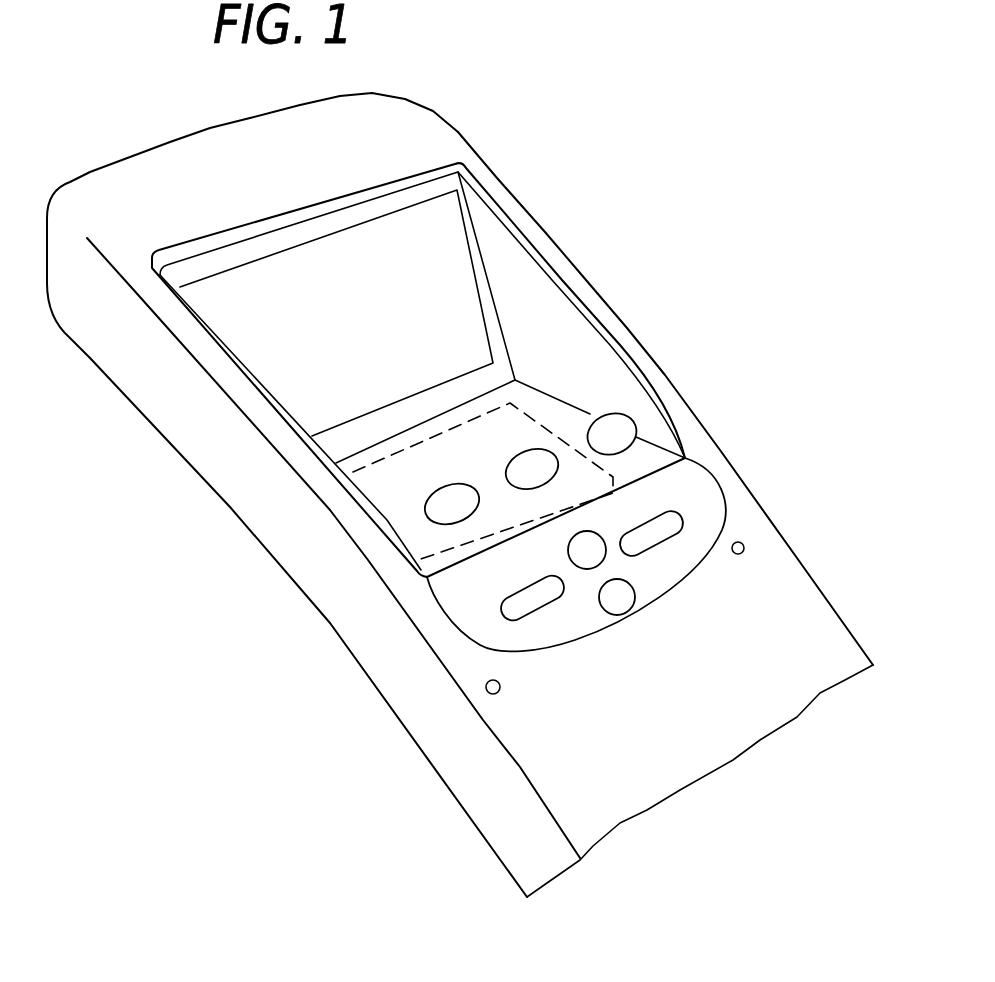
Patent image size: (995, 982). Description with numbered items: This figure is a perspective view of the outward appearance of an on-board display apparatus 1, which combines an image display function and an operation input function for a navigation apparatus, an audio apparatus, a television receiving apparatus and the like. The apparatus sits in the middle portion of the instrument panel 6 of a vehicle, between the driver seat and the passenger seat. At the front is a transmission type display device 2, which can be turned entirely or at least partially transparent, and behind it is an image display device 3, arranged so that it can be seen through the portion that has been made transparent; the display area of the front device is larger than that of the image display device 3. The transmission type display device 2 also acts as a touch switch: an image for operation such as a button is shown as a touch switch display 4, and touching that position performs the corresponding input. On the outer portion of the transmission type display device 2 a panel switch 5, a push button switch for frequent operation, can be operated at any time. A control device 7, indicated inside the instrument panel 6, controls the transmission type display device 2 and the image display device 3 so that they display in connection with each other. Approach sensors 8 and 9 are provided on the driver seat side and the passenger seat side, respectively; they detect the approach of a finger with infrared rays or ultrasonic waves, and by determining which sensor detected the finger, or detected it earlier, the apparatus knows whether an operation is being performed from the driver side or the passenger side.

The on-board display apparatus 1 is at (583, 84).
The transmission type display device 2 is at (573, 337).
The image display device 3 is at (447, 223).
The touch switch display 4 is at (613, 432).
The panel switch 5 is at (663, 527).
The instrument panel 6 is at (417, 120).
The control device 7 is at (550, 432).
The approach sensor 8 is at (486, 690).
The approach sensor 9 is at (744, 546).